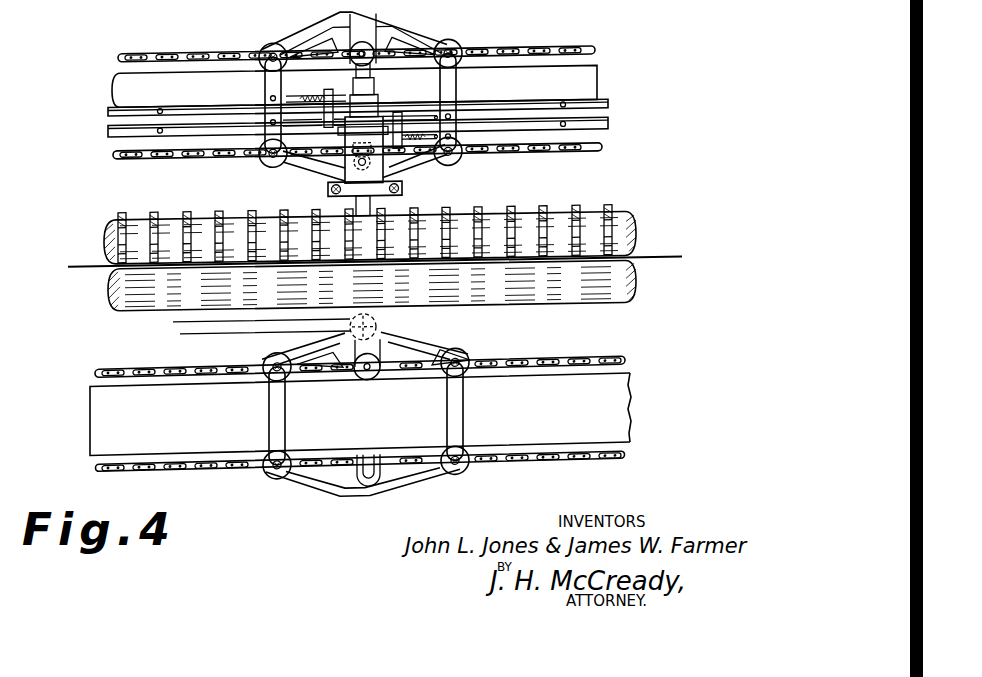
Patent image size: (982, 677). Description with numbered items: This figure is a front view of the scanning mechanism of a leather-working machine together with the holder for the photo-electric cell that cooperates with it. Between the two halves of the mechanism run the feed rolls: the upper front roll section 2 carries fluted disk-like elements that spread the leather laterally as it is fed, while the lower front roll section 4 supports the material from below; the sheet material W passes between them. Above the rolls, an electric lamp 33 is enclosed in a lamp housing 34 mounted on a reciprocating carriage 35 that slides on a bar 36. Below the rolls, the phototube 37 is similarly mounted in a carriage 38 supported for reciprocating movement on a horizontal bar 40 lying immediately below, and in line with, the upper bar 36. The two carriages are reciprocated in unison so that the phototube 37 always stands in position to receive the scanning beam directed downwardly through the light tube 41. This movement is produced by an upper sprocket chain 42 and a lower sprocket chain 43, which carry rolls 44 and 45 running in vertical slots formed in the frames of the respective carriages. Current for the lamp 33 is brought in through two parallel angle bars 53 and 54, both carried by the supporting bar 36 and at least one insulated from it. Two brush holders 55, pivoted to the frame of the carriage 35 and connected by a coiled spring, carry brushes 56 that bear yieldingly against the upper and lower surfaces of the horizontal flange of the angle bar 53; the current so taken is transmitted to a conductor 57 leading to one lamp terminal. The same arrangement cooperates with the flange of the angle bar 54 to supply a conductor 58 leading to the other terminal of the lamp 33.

The upper front roll section 2 is at (590, 214).
The lower front roll section 4 is at (607, 302).
The wire W is at (662, 258).
The electric lamp 33 is at (360, 190).
The lamp housing 34 is at (328, 175).
The reciprocating carriage 35 is at (412, 41).
The bar 36 is at (592, 82).
The photo-electric cell or phototube 37 is at (378, 312).
The carriage 38 is at (347, 485).
The horizontal bar 40 is at (622, 399).
The light tube 41 is at (378, 208).
The upper sprocket chain 42 is at (557, 53).
The lower sprocket chain 43 is at (557, 365).
The roll 44 is at (363, 50).
The roll 45 is at (368, 374).
The angle bar 53 is at (608, 109).
The angle bar 54 is at (608, 121).
The brush holders 55 is at (268, 99).
The brushes 56 is at (330, 110).
The conductor 57 is at (300, 77).
The conductor 58 is at (458, 99).